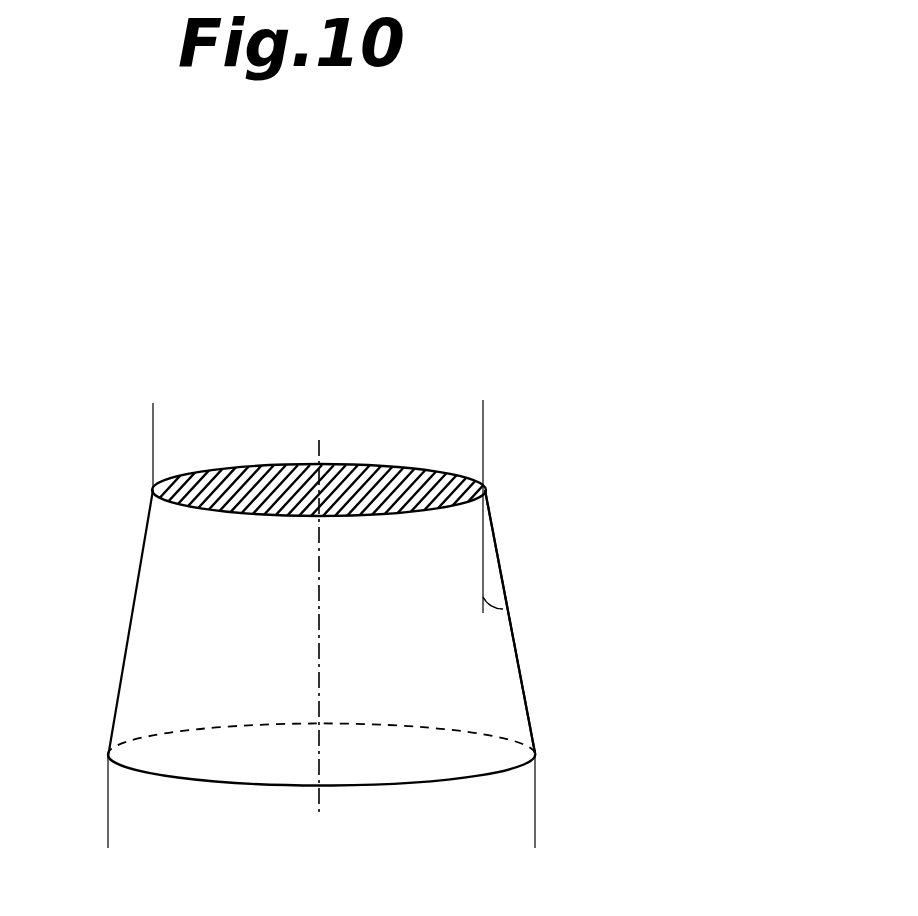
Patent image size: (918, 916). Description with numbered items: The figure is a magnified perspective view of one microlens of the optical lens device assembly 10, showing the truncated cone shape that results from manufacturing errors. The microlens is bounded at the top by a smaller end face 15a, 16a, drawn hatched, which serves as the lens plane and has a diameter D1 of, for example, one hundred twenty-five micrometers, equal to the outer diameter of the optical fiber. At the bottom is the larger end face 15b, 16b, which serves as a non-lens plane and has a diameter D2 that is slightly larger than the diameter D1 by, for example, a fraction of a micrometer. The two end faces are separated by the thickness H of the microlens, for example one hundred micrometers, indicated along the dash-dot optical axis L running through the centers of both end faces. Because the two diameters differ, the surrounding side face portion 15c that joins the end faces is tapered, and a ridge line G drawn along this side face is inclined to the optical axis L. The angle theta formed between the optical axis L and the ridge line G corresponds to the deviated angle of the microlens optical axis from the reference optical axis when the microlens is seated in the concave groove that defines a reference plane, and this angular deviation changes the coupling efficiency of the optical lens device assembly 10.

The optical lens device assembly 10 is at (127, 450).
The end face of microlens 15a is at (446, 453).
The end face of microlens 16a is at (455, 463).
The other end face of microlens 15b is at (454, 767).
The end face of microlens 16b is at (480, 773).
The surrounding side face portion 15c is at (497, 707).
The optical axis L is at (318, 456).
The diameter of smaller end face D1 is at (483, 417).
The diameter of larger end face D2 is at (535, 836).
The thickness H is at (318, 500).
The angle theta is at (505, 620).
The ridge line G is at (500, 545).